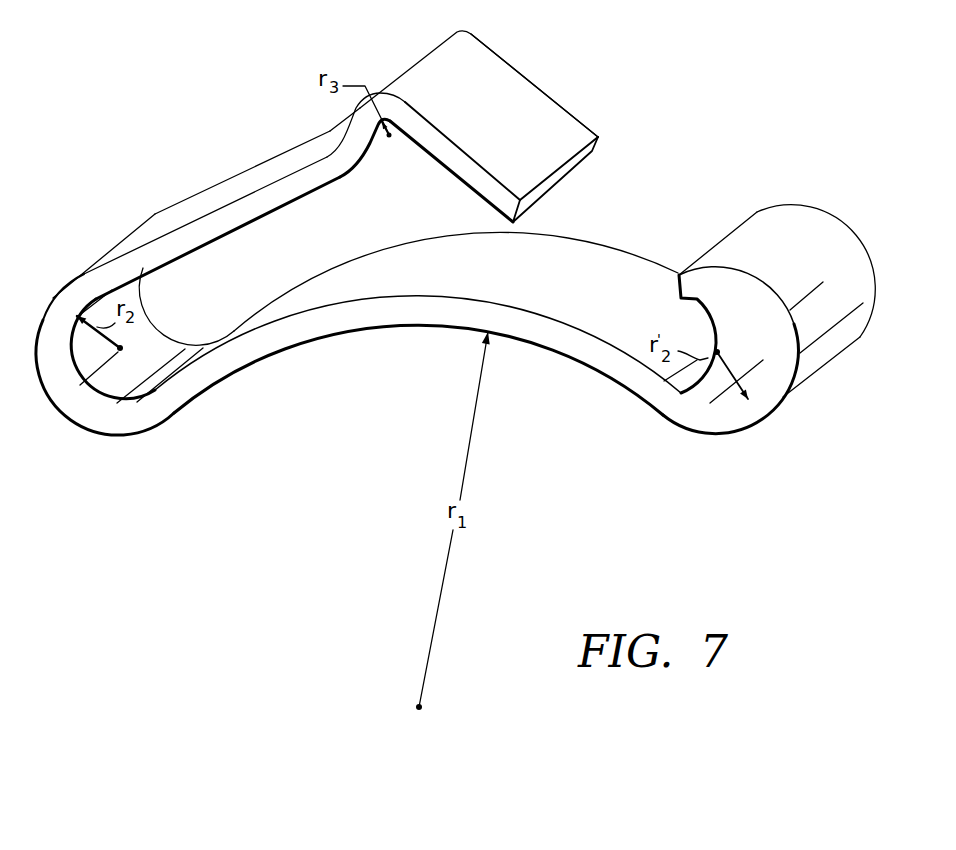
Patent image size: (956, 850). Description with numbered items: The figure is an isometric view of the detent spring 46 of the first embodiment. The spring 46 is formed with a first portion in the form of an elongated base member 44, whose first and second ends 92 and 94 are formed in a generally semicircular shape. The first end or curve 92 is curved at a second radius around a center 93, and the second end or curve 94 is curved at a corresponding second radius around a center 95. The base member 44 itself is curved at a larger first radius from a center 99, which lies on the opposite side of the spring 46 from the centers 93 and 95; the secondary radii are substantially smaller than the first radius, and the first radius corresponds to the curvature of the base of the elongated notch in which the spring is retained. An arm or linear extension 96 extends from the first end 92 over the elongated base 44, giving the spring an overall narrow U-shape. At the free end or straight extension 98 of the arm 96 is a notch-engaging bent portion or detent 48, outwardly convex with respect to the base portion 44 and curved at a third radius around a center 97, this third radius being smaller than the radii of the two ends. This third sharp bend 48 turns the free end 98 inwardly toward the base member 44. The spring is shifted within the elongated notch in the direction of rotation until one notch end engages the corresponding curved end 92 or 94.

The elongated base member 44 is at (418, 318).
The spring 46 is at (468, 237).
The bent portion or detent 48 is at (417, 62).
The first end or curve 92 is at (95, 424).
The center 93 is at (157, 332).
The second end or curve 94 is at (833, 343).
The center 95 is at (716, 350).
The arm or linear extension 96 is at (222, 206).
The center 97 is at (389, 137).
The free end or straight extension 98 is at (523, 72).
The center 99 is at (417, 707).